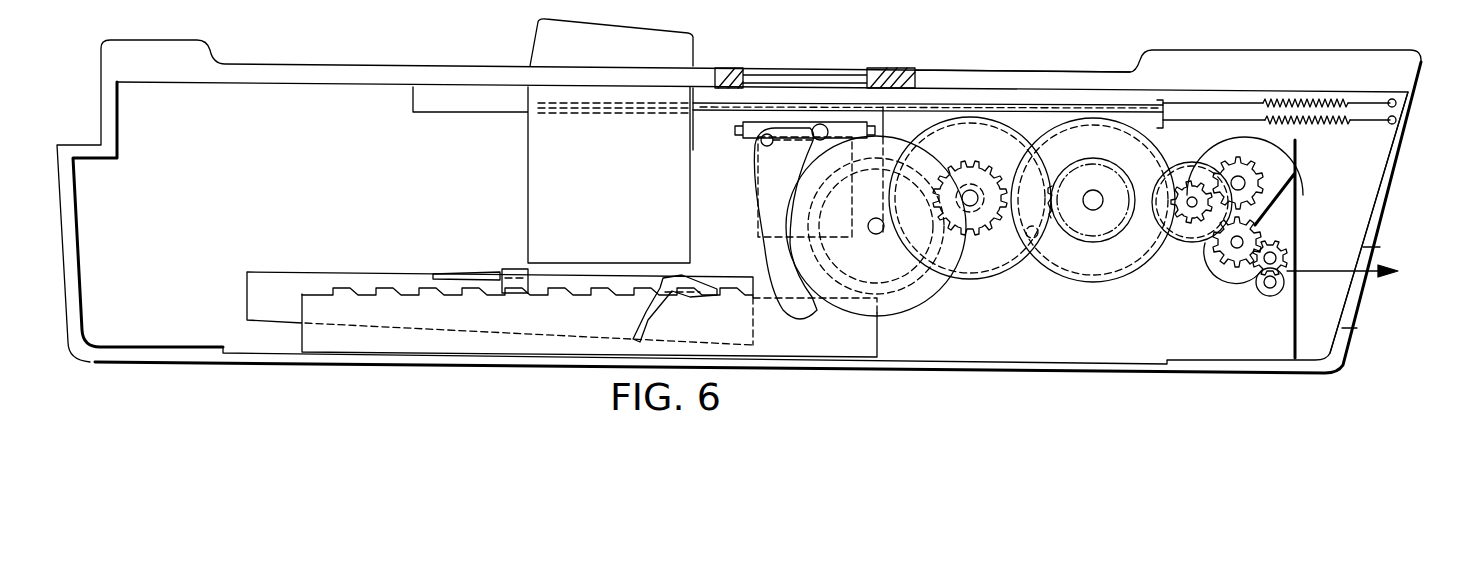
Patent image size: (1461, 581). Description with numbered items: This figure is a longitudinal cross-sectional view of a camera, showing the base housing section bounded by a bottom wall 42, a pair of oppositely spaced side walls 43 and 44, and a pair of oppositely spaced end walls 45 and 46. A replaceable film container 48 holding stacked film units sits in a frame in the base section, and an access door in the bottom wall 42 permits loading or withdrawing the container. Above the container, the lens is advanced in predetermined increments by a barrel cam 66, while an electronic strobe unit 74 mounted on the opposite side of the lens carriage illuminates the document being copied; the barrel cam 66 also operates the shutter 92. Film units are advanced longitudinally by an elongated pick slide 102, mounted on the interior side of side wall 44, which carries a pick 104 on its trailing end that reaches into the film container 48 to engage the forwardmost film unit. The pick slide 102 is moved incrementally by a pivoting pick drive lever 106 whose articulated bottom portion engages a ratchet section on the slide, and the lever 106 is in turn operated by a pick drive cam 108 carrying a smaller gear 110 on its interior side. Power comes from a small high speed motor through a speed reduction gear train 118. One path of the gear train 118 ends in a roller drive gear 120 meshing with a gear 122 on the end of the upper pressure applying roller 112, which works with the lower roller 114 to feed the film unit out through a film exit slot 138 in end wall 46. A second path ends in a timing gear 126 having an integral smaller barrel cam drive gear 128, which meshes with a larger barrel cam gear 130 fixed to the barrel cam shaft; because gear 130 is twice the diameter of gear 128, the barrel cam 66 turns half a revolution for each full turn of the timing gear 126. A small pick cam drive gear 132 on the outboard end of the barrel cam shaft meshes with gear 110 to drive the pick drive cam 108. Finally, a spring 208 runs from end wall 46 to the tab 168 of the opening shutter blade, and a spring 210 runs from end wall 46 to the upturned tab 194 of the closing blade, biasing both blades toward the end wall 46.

The bottom wall 42 is at (975, 372).
The side wall 43 is at (200, 188).
The side wall 44 is at (273, 64).
The end wall 45 is at (75, 242).
The end wall 46 is at (1390, 197).
The film container 48 is at (307, 283).
The barrel cam 66 is at (978, 125).
The electronic strobe unit 74 is at (543, 160).
The shutter 92 is at (942, 108).
The pick slide 102 is at (455, 345).
The pick 104 is at (481, 272).
The pick drive lever 106 is at (762, 146).
The pick drive cam 108 is at (765, 175).
The gear 110 is at (905, 282).
The upper pressure applying roller 112 is at (1283, 262).
The pressure applying roller 114 is at (1258, 292).
The speed reduction gear train 118 is at (1220, 160).
The roller drive gear 120 is at (1230, 255).
The gear 122 is at (1280, 245).
The timing gear 126 is at (1097, 127).
The barrel cam drive gear 128 is at (1120, 225).
The barrel cam gear 130 is at (1000, 277).
The pick cam drive gear 132 is at (972, 172).
The film exit slot 138 is at (1348, 308).
The tab 168 is at (1165, 128).
The upturned tab 194 is at (1160, 100).
The spring 208 is at (1322, 121).
The spring 210 is at (1292, 103).